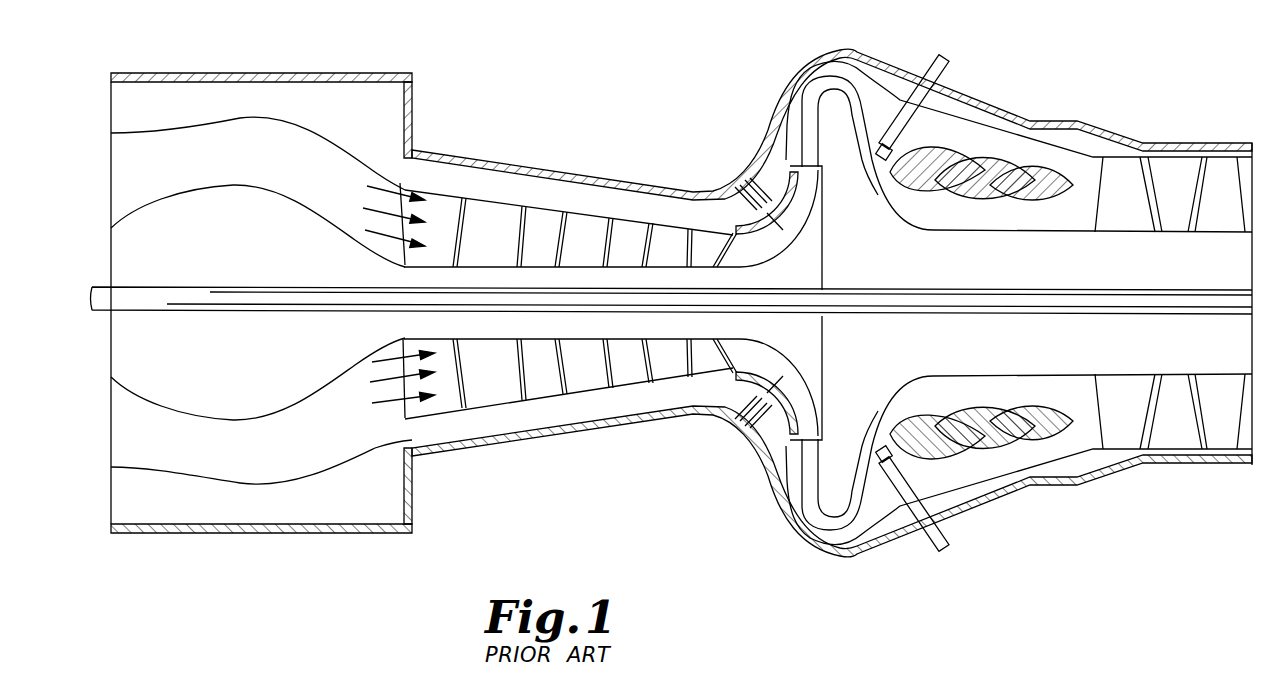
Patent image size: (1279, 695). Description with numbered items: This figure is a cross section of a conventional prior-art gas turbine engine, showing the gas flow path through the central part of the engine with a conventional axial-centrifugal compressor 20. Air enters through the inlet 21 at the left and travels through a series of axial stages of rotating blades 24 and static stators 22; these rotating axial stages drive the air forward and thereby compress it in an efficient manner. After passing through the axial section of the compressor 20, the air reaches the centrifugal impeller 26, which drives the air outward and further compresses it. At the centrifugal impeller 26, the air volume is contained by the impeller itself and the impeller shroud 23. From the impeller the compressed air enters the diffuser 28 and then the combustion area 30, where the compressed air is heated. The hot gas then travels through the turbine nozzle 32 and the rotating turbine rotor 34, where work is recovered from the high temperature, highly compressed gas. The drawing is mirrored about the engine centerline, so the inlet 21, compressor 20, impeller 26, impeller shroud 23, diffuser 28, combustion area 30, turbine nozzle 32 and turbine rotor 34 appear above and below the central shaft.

The axial-centrifugal compressor 20 is at (582, 200).
The inlet 21 is at (357, 191).
The static stators 22 is at (625, 242).
The impeller shroud 23 is at (771, 128).
The rotating blades 24 is at (587, 240).
The centrifugal impeller 26 is at (750, 182).
The diffuser 28 is at (838, 77).
The combustion area 30 is at (962, 163).
The turbine nozzle 32 is at (1173, 177).
The turbine rotor 34 is at (1127, 177).